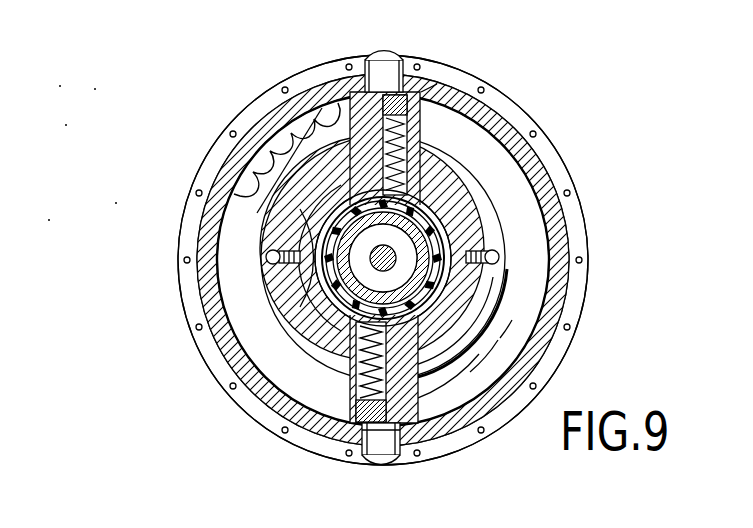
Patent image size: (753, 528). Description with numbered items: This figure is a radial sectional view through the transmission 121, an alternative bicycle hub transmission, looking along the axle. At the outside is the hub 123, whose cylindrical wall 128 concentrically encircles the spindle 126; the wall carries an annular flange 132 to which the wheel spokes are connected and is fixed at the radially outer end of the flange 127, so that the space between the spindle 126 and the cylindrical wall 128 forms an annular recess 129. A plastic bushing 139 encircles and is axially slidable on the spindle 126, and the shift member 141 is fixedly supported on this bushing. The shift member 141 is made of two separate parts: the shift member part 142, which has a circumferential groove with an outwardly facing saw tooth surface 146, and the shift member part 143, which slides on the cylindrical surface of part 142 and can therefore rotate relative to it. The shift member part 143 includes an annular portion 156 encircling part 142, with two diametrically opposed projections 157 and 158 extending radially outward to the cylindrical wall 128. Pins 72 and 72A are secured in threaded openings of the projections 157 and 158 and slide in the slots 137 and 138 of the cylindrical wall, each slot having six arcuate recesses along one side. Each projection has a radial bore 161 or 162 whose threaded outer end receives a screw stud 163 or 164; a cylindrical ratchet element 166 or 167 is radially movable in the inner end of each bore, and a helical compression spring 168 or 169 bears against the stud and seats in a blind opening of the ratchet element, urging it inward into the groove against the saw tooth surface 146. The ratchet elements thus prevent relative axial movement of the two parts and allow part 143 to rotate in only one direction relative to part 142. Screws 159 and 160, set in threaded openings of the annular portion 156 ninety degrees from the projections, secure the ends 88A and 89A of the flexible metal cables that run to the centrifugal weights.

The transmission 121 is at (188, 71).
The hub 123 is at (570, 167).
The annular flange 132 is at (216, 162).
The cylindrical wall 128 is at (552, 289).
The flange 127 is at (484, 360).
The threaded screw stud 163 is at (422, 88).
The annular portion 156 is at (298, 282).
The spindle 126 is at (300, 303).
The plastic bushing 139 is at (312, 328).
The saw tooth surface 146 is at (470, 208).
The shift member 141 is at (461, 326).
The shift member part 143 is at (455, 298).
The projection 158 is at (441, 404).
The annular recess 129 is at (468, 380).
The projection 157 is at (343, 108).
The bore 161 is at (421, 118).
The cylindrical ratchet element 166 is at (428, 180).
The helical compression spring 168 is at (406, 148).
The slot 137 is at (366, 76).
The pin 72 is at (385, 50).
The bore 162 is at (340, 400).
The cylindrical ratchet element 167 is at (333, 358).
The helical compression spring 169 is at (352, 377).
The slot 138 is at (410, 447).
The threaded screw stud 164 is at (353, 425).
The pin 72A is at (383, 469).
The shift member part 142 is at (442, 279).
The screw 159 is at (266, 254).
The cable end 88A is at (278, 249).
The screw 160 is at (497, 258).
The cable end 89A is at (494, 249).